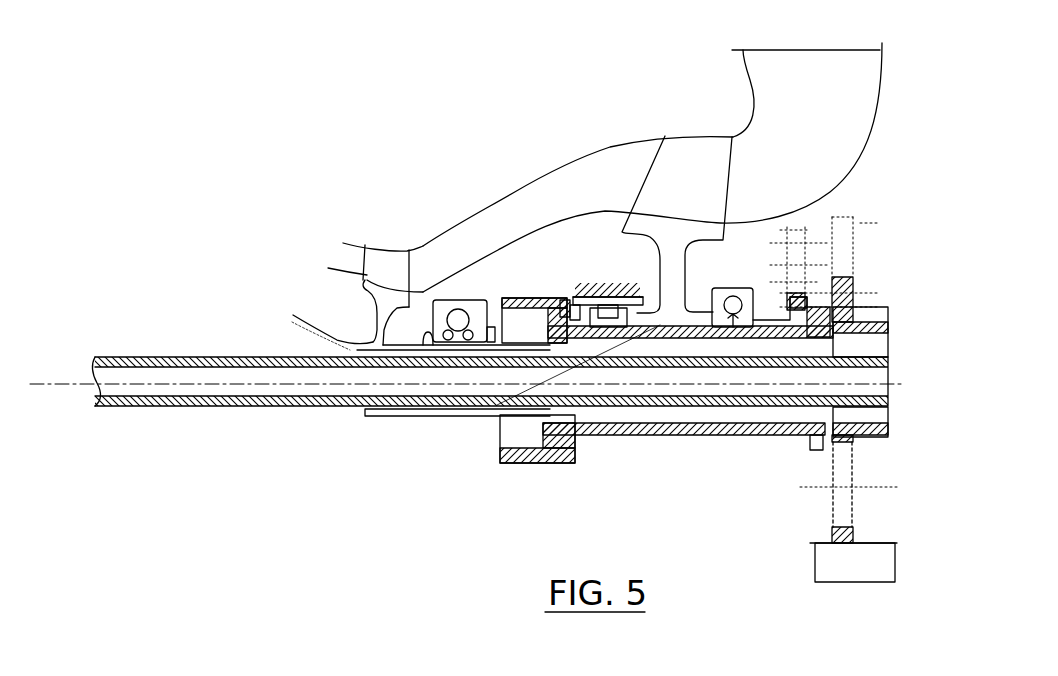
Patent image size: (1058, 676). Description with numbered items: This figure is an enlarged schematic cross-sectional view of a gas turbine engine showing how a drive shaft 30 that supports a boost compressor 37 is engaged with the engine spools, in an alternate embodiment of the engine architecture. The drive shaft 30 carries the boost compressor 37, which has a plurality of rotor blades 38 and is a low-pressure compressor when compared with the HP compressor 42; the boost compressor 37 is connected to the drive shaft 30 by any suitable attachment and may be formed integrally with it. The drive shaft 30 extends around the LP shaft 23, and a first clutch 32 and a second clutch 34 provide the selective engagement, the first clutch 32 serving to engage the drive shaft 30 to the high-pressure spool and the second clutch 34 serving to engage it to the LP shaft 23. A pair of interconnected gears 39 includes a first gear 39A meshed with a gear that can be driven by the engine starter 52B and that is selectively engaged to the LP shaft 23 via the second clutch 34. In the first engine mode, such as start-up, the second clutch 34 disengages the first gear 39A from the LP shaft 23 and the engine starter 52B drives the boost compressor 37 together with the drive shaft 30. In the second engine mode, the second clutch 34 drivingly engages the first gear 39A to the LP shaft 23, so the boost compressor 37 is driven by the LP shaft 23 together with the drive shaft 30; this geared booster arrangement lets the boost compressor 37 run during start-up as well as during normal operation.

The LP shaft 23 is at (308, 410).
The drive shaft 30 is at (623, 436).
The first clutch 32 is at (523, 434).
The second clutch 34 is at (886, 344).
The boost compressor 37 is at (603, 227).
The rotor blades 38 is at (649, 160).
The pair of interconnected gears 39 is at (878, 206).
The first gear 39A is at (860, 283).
The HP compressor 42 is at (385, 234).
The engine starter 52B is at (872, 583).